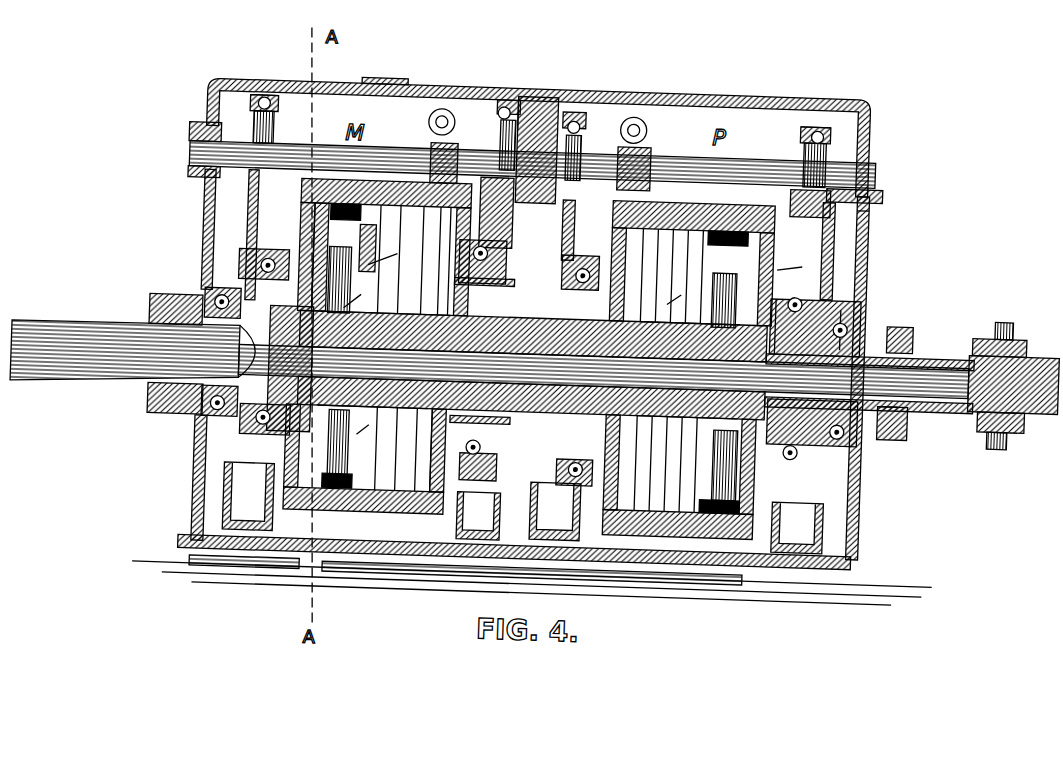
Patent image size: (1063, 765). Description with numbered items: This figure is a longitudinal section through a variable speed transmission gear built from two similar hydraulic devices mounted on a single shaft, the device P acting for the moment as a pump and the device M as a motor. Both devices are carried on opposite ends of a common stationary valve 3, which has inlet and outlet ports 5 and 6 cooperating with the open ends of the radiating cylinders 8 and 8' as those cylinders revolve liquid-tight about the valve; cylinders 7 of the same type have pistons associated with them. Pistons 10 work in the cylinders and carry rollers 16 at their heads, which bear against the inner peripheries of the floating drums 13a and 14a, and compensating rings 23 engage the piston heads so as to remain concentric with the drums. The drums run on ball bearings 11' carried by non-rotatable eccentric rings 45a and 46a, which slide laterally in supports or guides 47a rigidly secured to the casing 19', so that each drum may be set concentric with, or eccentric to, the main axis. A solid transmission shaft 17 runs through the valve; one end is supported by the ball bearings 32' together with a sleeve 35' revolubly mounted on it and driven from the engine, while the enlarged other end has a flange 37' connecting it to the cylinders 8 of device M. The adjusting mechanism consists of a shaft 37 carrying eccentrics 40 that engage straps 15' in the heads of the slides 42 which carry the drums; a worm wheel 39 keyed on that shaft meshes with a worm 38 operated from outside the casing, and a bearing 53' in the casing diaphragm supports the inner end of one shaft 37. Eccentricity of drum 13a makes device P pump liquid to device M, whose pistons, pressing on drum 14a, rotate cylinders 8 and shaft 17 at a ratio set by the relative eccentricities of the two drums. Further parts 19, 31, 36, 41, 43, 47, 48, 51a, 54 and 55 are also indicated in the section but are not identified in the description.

The stationary valve 3 is at (531, 359).
The inlet port 5 is at (290, 240).
The outlet port 6 is at (366, 434).
The cylinders 7 is at (512, 366).
The cylinders 8 is at (386, 254).
The cylinders 8' is at (790, 258).
The pistons 10 is at (350, 245).
The ball bearings 11' is at (512, 362).
The floating drum 13a is at (529, 368).
The floating drum 14a is at (415, 95).
The straps 15' is at (541, 93).
The rollers 16 is at (325, 517).
The transmission shaft 17 is at (912, 375).
The coupling key 19 is at (1021, 435).
The casing 19' is at (914, 215).
The compensating rings 23 is at (357, 228).
The bearing boss 31 is at (165, 310).
The ball bearings 32' is at (889, 326).
The sleeve 35' is at (923, 437).
The bearing housing 36 is at (820, 293).
The shaft 37 is at (532, 151).
The flange 37' is at (529, 415).
The worm 38 is at (448, 125).
The worm wheel 39 is at (448, 184).
The eccentrics 40 is at (271, 122).
The bearing 41 is at (500, 104).
The slides 42 is at (560, 230).
The bearing boss 43 is at (178, 426).
The non-rotatable ring 45a is at (800, 290).
The non-rotatable ring 46a is at (200, 232).
The drive shaft 47 is at (100, 390).
The supports or guides 47a is at (240, 512).
The bearing support wall 48 is at (600, 135).
The casing flange 51a is at (200, 185).
The bearing 53' is at (564, 94).
The clutch plate 54 is at (458, 287).
The clutch plate 55 is at (458, 425).